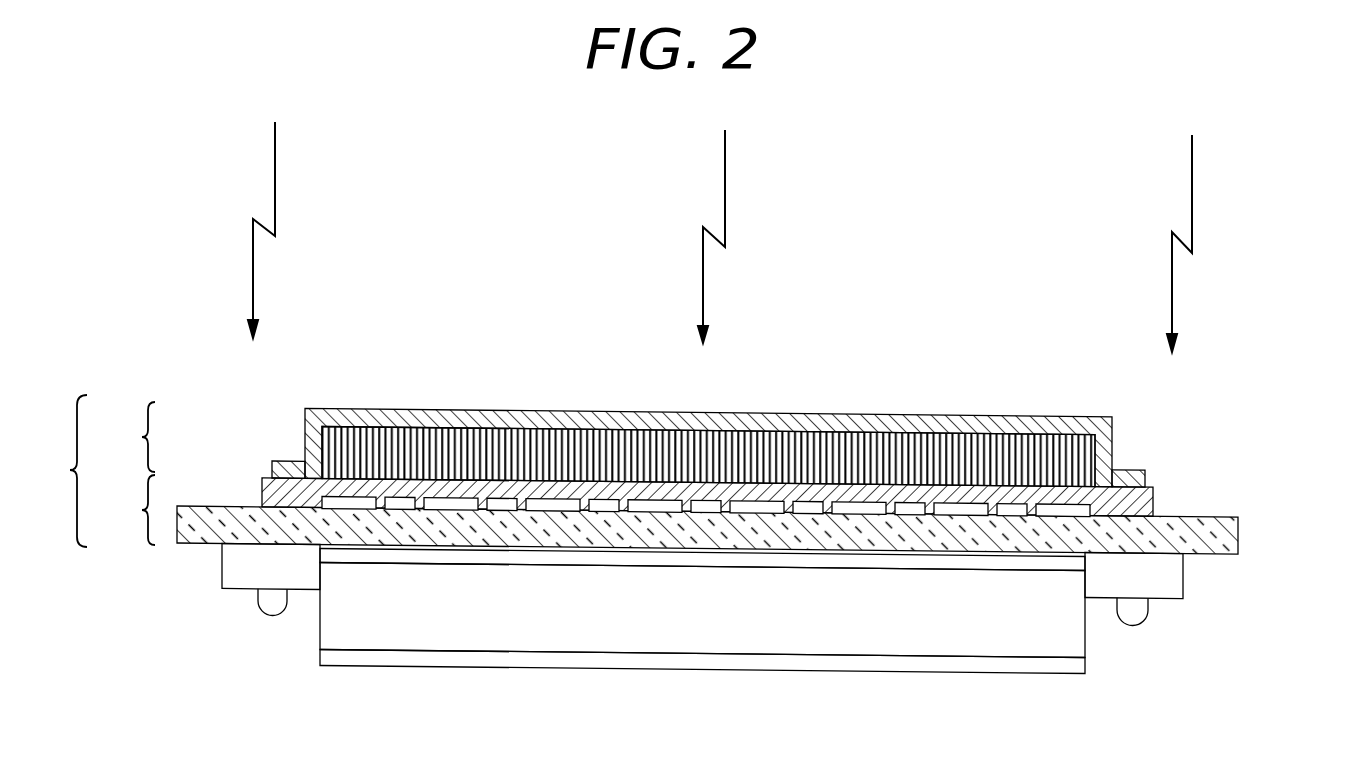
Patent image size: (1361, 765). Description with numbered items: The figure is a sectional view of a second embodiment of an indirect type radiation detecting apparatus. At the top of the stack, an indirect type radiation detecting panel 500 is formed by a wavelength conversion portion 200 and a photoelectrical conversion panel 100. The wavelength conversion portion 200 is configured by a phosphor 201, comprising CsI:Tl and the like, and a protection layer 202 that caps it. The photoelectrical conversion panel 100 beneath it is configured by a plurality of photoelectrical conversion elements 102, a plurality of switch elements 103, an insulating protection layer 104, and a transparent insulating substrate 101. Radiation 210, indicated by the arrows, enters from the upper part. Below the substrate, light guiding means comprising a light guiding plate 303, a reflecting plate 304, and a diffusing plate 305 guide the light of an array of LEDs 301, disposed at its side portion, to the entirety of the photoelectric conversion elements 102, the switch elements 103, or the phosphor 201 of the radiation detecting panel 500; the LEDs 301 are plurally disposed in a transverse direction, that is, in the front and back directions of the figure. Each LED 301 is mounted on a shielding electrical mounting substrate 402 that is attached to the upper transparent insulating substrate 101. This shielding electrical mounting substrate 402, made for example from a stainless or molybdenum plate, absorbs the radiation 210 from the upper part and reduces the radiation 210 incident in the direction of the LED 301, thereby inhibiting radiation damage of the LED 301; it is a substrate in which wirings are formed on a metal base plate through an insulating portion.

The photoelectrical conversion panel 100 is at (122, 510).
The transparent insulating substrate 101 is at (1225, 530).
The photoelectrical conversion element 102 is at (1080, 492).
The switch element 103 is at (1023, 492).
The insulating protection layer 104 is at (263, 487).
The wavelength conversion portion 200 is at (122, 437).
The phosphor 201 is at (772, 445).
The protection layer 202 is at (938, 417).
The radiation 210 is at (727, 186).
The LED 301 is at (270, 608).
The light guiding plate 303 is at (500, 630).
The reflecting plate 304 is at (627, 660).
The diffusing plate 305 is at (735, 558).
The shielding electrical mounting substrate 402 is at (235, 568).
The radiation detecting panel 500 is at (54, 471).